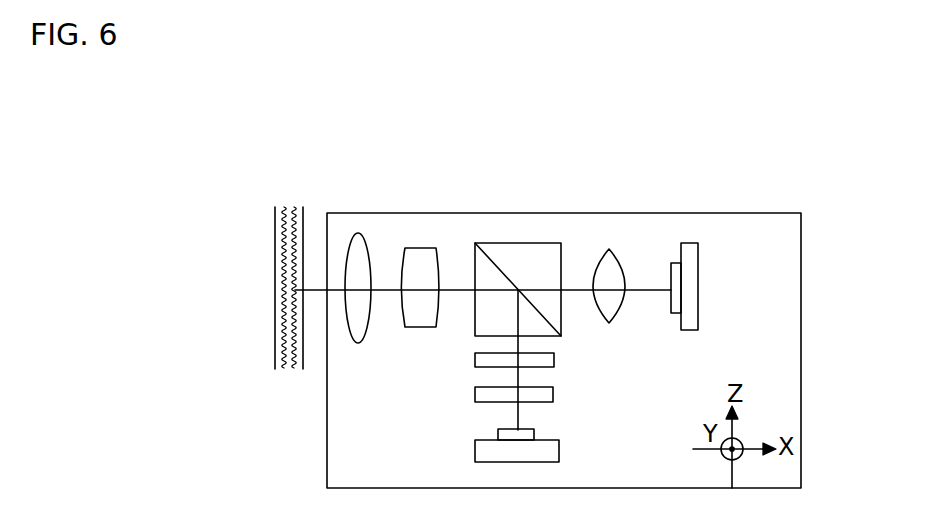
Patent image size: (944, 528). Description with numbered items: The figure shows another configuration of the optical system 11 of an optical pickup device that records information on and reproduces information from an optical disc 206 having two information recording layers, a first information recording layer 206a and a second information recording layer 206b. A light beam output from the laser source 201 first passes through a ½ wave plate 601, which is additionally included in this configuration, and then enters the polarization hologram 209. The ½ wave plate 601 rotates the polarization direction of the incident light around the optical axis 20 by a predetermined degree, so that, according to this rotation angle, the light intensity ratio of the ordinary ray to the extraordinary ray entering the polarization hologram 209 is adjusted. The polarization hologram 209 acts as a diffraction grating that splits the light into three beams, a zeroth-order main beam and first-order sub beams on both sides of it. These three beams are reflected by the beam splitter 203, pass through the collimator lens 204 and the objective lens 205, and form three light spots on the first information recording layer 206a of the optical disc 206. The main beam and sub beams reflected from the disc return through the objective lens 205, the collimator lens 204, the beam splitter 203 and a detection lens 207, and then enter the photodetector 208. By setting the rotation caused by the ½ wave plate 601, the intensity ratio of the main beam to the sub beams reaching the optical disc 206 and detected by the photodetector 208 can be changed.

The optical system 11 is at (814, 274).
The optical disc 206 is at (275, 305).
The first information recording layer 206a is at (292, 373).
The second information recording layer 206b is at (287, 205).
The objective lens 205 is at (360, 245).
The collimator lens 204 is at (426, 256).
The beam splitter 203 is at (530, 253).
The detection lens 207 is at (608, 263).
The photodetector 208 is at (693, 247).
The polarization hologram 209 is at (475, 358).
The ½ wave plate 601 is at (553, 393).
The optical axis 20 is at (517, 408).
The laser source 201 is at (550, 448).